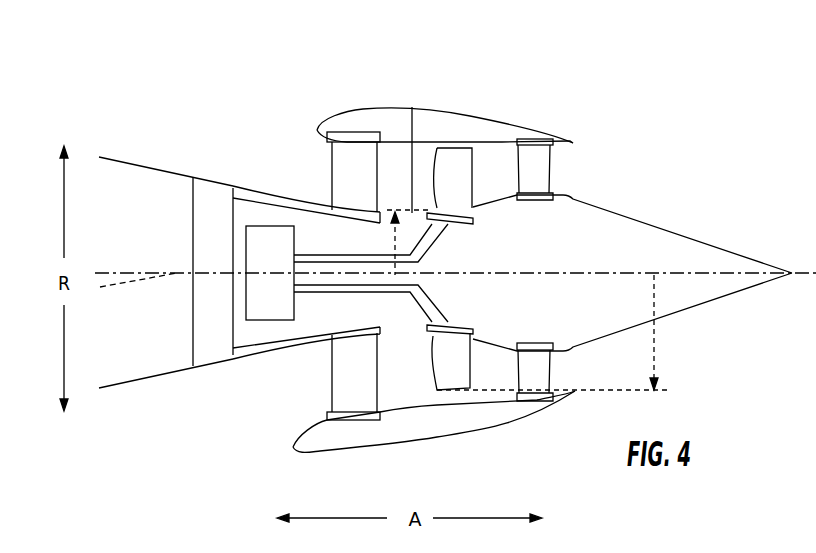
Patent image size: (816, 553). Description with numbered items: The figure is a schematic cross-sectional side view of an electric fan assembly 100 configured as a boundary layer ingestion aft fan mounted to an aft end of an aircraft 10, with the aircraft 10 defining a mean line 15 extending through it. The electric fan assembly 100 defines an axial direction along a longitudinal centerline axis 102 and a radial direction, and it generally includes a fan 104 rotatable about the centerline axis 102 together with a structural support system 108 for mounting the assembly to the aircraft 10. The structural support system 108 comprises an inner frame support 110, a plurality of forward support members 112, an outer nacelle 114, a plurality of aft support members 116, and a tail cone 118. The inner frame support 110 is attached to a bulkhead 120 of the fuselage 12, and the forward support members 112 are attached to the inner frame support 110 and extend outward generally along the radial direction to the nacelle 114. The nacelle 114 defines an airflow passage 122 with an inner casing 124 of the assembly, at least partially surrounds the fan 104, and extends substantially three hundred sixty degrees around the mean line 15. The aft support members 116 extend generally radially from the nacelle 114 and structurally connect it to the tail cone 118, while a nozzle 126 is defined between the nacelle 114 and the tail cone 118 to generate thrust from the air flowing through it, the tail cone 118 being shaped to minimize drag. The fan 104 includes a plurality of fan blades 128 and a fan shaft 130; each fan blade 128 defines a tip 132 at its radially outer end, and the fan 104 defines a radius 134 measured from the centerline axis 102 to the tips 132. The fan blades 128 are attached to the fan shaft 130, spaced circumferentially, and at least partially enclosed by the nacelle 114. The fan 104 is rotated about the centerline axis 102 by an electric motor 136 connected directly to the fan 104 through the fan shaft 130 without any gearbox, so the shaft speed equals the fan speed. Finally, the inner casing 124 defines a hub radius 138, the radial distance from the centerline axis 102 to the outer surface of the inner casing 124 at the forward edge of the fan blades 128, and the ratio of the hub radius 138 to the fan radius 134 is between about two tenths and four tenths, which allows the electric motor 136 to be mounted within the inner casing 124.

The aircraft 10 is at (110, 94).
The fuselage 12 is at (137, 381).
The mean line 15 is at (145, 284).
The electric fan assembly 100 is at (572, 83).
The longitudinal centerline axis 102 is at (808, 271).
The fan 104 is at (489, 167).
The structural support system 108 is at (299, 151).
The inner frame support 110 is at (251, 191).
The forward support members 112 is at (350, 150).
The outer nacelle 114 is at (397, 108).
The aft support members 116 is at (540, 163).
The tail cone 118 is at (703, 307).
The bulkhead 120 is at (197, 218).
The airflow passage 122 is at (401, 378).
The inner casing 124 is at (414, 115).
The nozzle 126 is at (507, 379).
The fan blades 128 is at (455, 387).
The fan shaft 130 is at (330, 288).
The tip 132 is at (446, 397).
The radius 134 is at (657, 360).
The electric motor 136 is at (263, 311).
The hub radius 138 is at (395, 232).